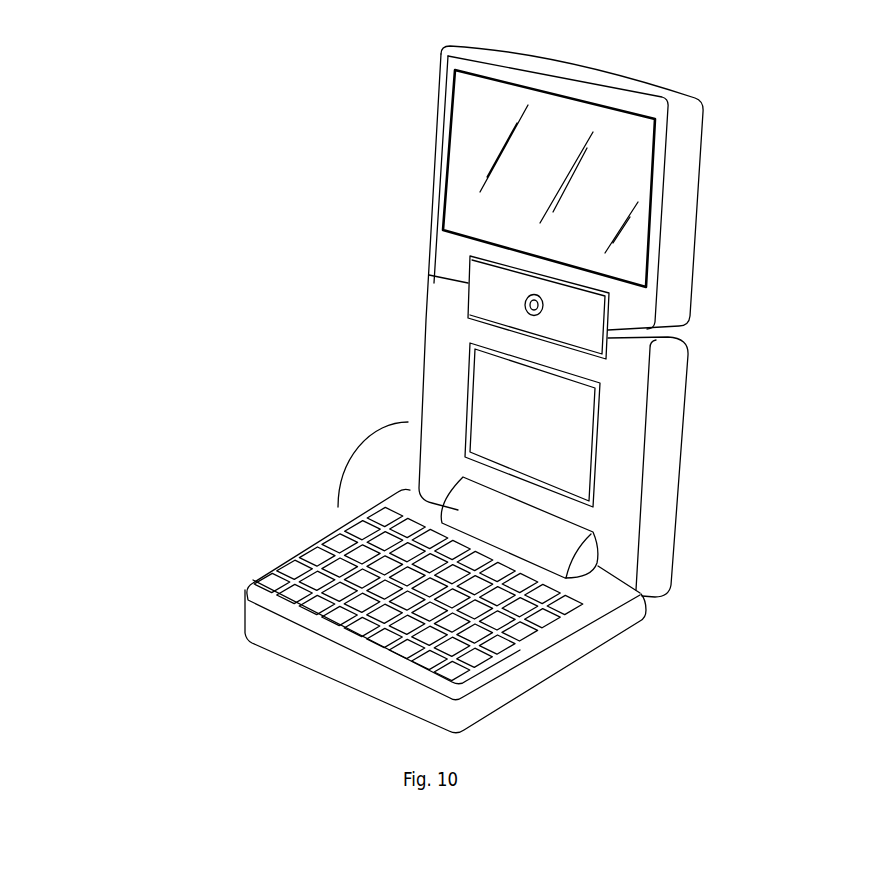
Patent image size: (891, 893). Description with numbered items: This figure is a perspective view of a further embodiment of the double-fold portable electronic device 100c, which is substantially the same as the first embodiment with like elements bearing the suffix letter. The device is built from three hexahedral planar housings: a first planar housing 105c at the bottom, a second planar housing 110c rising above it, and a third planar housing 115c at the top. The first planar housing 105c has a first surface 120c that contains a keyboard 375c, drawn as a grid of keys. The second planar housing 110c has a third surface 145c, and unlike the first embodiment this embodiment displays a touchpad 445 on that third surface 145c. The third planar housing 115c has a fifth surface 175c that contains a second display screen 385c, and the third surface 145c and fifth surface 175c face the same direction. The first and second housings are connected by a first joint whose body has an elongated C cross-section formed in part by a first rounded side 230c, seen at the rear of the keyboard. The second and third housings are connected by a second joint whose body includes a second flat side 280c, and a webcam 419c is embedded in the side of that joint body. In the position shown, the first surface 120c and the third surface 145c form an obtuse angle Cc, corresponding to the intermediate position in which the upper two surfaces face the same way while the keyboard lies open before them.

The double-fold portable electronic device 100c is at (226, 703).
The first planar housing 105c is at (232, 545).
The second planar housing 110c is at (395, 305).
The third planar housing 115c is at (717, 202).
The first surface 120c is at (310, 550).
The third surface 145c is at (433, 362).
The fifth surface 175c is at (446, 90).
The second display screen 385c is at (557, 173).
The webcam 419c is at (524, 307).
The second flat side 280c is at (587, 331).
The touchpad 445 is at (532, 408).
The first rounded side 230c is at (542, 534).
The keyboard 375c is at (430, 581).
The obtuse angle C Cc is at (359, 463).